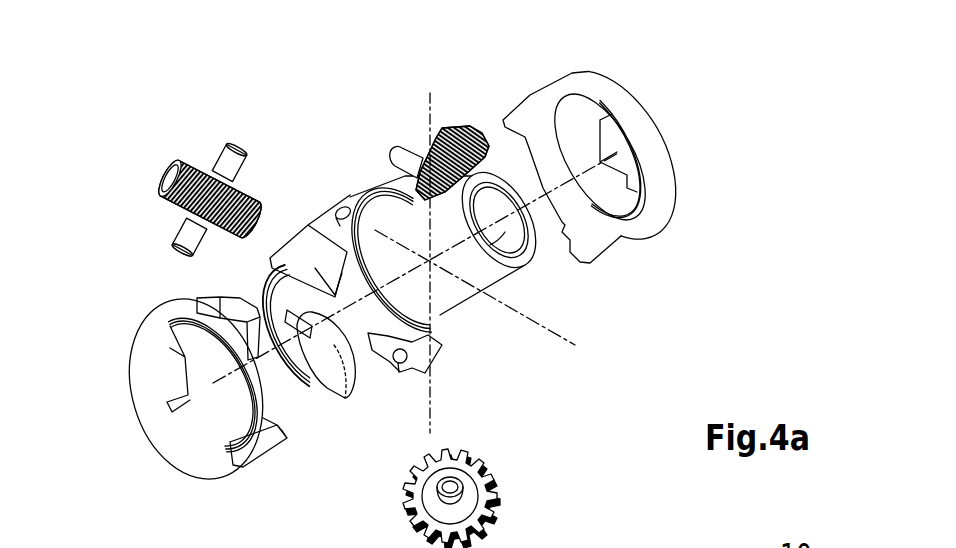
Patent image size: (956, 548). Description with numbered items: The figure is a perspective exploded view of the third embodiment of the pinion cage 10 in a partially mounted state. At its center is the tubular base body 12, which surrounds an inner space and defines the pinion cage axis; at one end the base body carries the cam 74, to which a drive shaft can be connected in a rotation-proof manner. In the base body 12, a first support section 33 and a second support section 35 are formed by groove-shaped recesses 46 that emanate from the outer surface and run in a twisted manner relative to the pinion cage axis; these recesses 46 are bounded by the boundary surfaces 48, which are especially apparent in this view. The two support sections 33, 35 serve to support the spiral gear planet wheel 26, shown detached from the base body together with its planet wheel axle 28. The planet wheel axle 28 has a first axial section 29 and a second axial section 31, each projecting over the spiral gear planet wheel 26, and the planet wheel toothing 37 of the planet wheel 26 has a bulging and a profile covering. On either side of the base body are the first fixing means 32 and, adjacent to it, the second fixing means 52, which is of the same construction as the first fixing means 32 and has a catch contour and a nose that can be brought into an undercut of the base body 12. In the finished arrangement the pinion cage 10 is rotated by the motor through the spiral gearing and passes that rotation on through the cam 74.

The pinion cage 10 is at (749, 85).
The base body 12 is at (323, 390).
The spiral gear planet wheel 26 is at (234, 155).
The planet wheel axle 28 is at (149, 190).
The first axial section 29 is at (187, 233).
The second axial section 31 is at (227, 160).
The first fixing means 32 is at (142, 392).
The first support section 33 is at (294, 350).
The second support section 35 is at (338, 207).
The planet wheel toothing 37 is at (249, 185).
The groove-shaped recesses 46 is at (265, 290).
The boundary surfaces 48 is at (358, 417).
The second fixing means 52 is at (640, 228).
The cam 74 is at (538, 247).